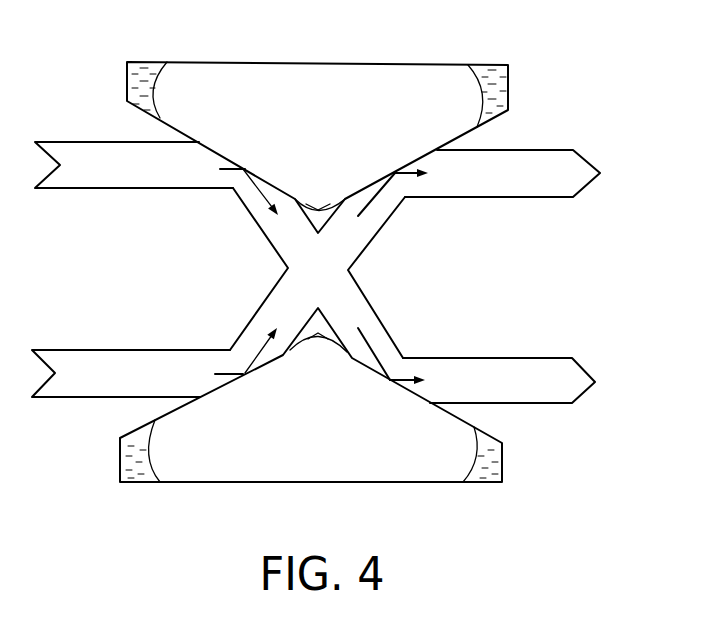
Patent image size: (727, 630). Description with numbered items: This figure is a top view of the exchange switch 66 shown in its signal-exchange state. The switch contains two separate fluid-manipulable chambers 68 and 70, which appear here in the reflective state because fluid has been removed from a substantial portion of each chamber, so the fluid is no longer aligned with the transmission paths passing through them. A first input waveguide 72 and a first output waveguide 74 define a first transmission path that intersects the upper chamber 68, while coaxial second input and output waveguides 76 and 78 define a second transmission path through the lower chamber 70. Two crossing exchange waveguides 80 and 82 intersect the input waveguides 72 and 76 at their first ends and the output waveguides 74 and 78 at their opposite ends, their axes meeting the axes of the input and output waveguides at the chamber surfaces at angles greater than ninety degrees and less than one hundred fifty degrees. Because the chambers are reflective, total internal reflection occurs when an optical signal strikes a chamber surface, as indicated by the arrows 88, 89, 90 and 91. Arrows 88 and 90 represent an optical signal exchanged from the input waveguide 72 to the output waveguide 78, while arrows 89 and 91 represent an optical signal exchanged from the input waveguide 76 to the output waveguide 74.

The exchange switch 66 is at (575, 38).
The fluid-manipulable chamber 68 is at (400, 72).
The fluid-manipulable chamber 70 is at (208, 472).
The first input waveguide 72 is at (80, 155).
The first output waveguide 74 is at (553, 163).
The second input waveguide 76 is at (73, 387).
The second output waveguide 78 is at (555, 397).
The exchange waveguide 80 is at (285, 248).
The exchange waveguide 82 is at (352, 248).
The arrow 88 is at (233, 169).
The arrow 89 is at (230, 374).
The arrow 90 is at (403, 380).
The arrow 91 is at (405, 173).